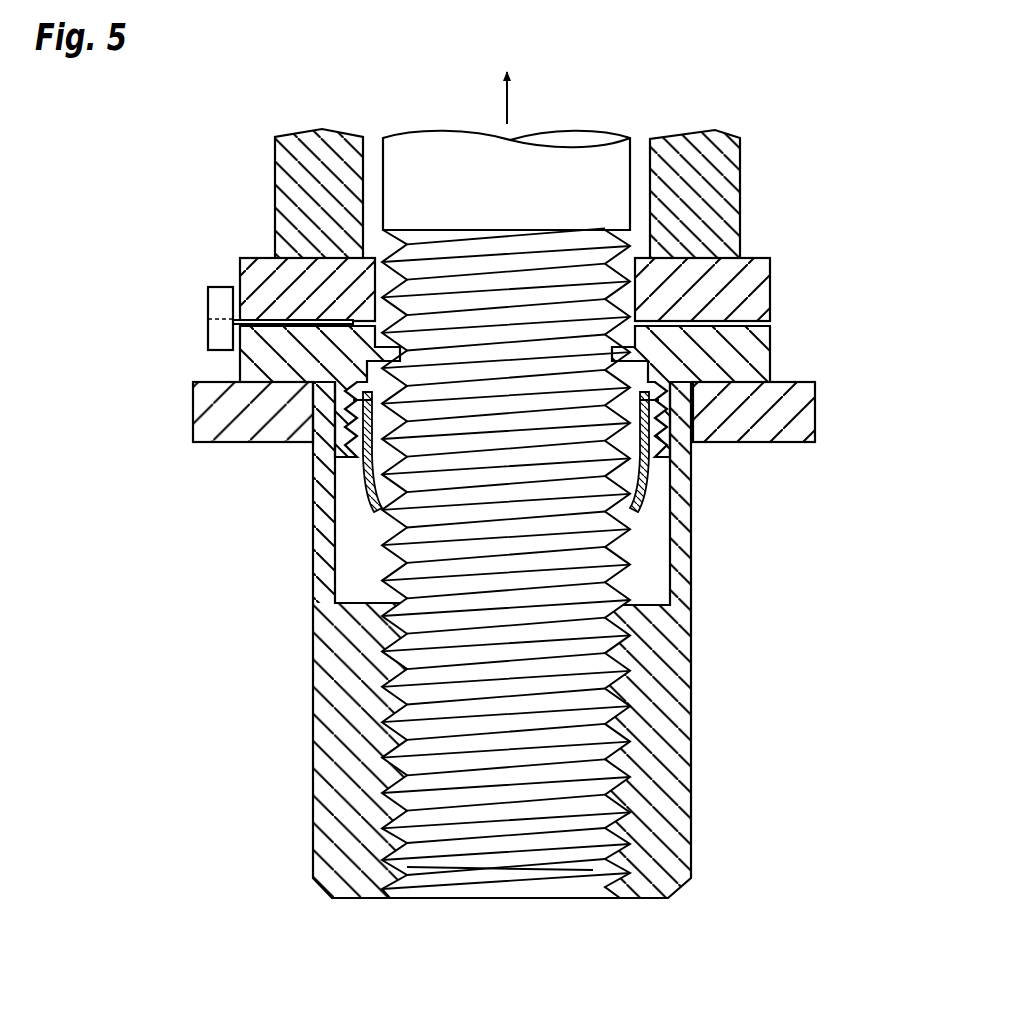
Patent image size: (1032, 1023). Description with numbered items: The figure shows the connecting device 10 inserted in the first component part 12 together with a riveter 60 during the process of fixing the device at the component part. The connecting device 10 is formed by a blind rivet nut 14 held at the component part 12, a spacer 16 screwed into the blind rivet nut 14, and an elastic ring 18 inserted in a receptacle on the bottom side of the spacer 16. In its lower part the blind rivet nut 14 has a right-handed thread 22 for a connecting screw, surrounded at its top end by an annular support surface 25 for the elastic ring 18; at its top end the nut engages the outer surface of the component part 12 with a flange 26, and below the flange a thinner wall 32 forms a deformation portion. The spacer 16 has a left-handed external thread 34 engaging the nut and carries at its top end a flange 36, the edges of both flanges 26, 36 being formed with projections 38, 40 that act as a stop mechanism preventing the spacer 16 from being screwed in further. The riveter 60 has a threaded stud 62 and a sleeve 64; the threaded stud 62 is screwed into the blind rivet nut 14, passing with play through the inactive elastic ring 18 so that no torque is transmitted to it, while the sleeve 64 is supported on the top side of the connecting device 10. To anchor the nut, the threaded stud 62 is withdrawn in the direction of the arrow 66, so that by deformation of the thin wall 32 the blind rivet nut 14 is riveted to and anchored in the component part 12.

The connecting device 10 is at (246, 694).
The first component part 12 is at (196, 414).
The blind rivet nut 14 is at (696, 738).
The spacer 16 is at (765, 258).
The elastic ring 18 is at (636, 534).
The right-handed thread 22 is at (425, 890).
The annular support surface 25 is at (368, 603).
The flange 26 is at (770, 342).
The thinner wall 32 is at (690, 511).
The external thread 34 is at (668, 452).
The flange 36 is at (770, 292).
The projection 38 is at (210, 338).
The projection 40 is at (208, 290).
The riveter 60 is at (690, 106).
The threaded stud 62 is at (542, 276).
The sleeve 64 is at (296, 145).
The arrow 66 is at (530, 98).